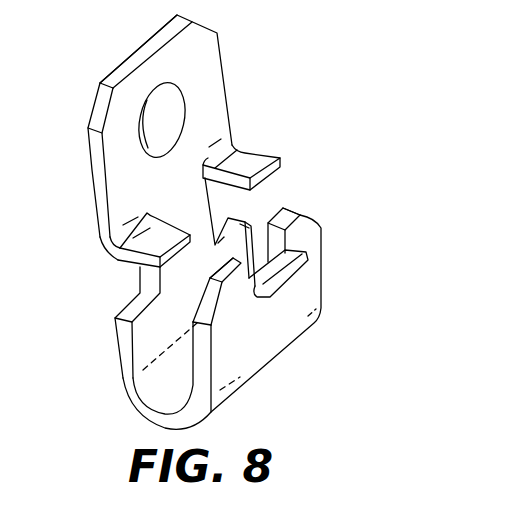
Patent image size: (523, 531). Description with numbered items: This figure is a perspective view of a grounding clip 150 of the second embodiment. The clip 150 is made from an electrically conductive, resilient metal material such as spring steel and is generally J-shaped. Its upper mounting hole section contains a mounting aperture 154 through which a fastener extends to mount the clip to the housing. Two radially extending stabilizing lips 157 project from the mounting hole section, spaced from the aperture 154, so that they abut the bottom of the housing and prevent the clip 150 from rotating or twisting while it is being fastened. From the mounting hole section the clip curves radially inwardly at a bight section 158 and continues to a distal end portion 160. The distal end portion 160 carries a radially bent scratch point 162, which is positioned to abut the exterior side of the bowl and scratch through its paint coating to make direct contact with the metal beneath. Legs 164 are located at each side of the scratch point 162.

The clip 150 is at (232, 82).
The mounting aperture 154 is at (164, 106).
The stabilizing lips 157 is at (259, 161).
The bight section 158 is at (158, 418).
The distal end portion 160 is at (275, 312).
The scratch point 162 is at (297, 272).
The legs 164 is at (122, 62).